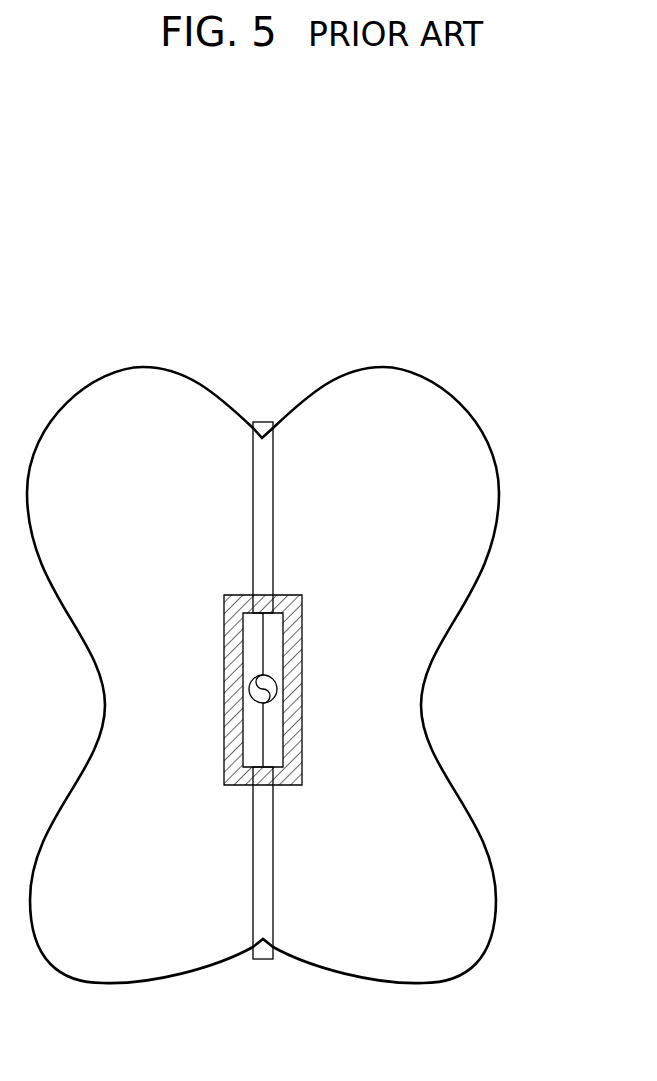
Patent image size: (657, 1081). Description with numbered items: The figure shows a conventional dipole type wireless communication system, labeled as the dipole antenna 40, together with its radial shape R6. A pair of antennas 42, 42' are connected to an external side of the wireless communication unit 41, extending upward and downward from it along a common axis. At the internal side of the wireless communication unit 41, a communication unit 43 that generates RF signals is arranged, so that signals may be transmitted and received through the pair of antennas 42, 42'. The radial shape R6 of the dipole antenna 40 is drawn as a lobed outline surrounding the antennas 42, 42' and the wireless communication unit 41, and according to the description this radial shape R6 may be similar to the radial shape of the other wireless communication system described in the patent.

The radial shape R6 is at (497, 495).
The dipole antenna 40 is at (207, 575).
The wireless communication unit 41 is at (303, 627).
The antenna 42 is at (303, 517).
The antenna 42' is at (305, 863).
The communication unit 43 is at (272, 681).